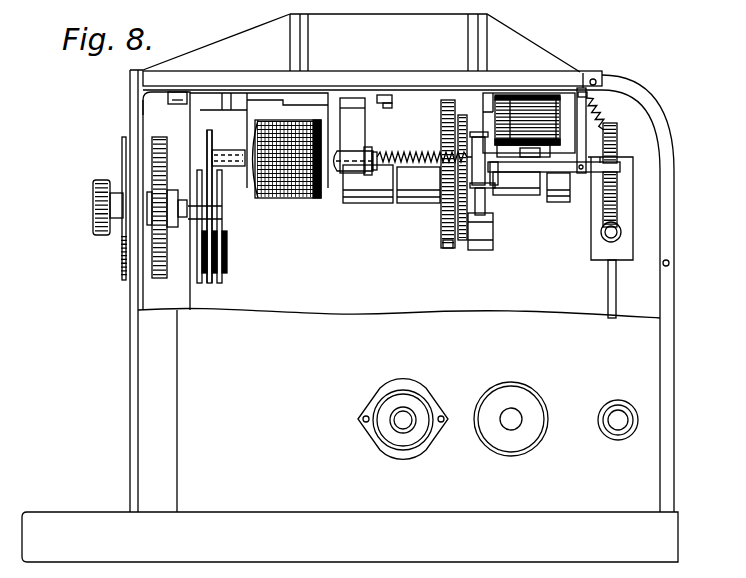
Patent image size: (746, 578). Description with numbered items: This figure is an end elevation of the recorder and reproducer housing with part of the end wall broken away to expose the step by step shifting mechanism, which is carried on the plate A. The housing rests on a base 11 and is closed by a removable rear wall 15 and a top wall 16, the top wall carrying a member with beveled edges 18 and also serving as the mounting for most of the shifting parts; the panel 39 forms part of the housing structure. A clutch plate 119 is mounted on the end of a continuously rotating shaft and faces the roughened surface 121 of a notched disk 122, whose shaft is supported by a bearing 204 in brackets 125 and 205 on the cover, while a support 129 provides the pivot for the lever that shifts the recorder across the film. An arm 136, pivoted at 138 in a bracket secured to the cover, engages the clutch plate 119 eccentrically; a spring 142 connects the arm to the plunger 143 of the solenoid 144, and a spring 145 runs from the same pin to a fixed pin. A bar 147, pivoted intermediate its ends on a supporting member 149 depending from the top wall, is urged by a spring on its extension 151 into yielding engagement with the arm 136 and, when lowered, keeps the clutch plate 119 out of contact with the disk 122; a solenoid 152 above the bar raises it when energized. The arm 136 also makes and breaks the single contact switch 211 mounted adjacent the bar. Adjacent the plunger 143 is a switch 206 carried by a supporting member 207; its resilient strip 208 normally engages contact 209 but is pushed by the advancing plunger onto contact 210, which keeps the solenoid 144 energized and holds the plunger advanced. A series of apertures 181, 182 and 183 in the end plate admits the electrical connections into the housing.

The plate A is at (143, 106).
The base 11 is at (617, 552).
The removable rear wall 15 is at (676, 288).
The top wall 16 is at (529, 75).
The beveled edge 18 is at (480, 30).
The front panel 39 is at (121, 401).
The clutch plate 119 is at (463, 241).
The roughened surface 121 is at (452, 248).
The notched disk 122 is at (440, 228).
The bracket 125 is at (217, 95).
The support 129 is at (205, 140).
The arm 136 is at (503, 188).
The pivot 138 is at (511, 172).
The spring 142 is at (529, 140).
The plunger 143 is at (226, 150).
The solenoid 144 is at (303, 199).
The spring 145 is at (430, 156).
The bar 147 is at (497, 163).
The supporting member 149 is at (597, 123).
The extension 151 is at (596, 212).
The solenoid 152 is at (512, 97).
The aperture 181 is at (437, 397).
The aperture 182 is at (541, 391).
The aperture 183 is at (638, 393).
The bearing 204 is at (378, 153).
The bracket 205 is at (392, 97).
The switch 206 is at (234, 263).
The supporting member 207 is at (166, 201).
The resilient strip 208 is at (212, 227).
The contact 209 is at (221, 208).
The contact 210 is at (193, 228).
The single contact switch 211 is at (217, 284).